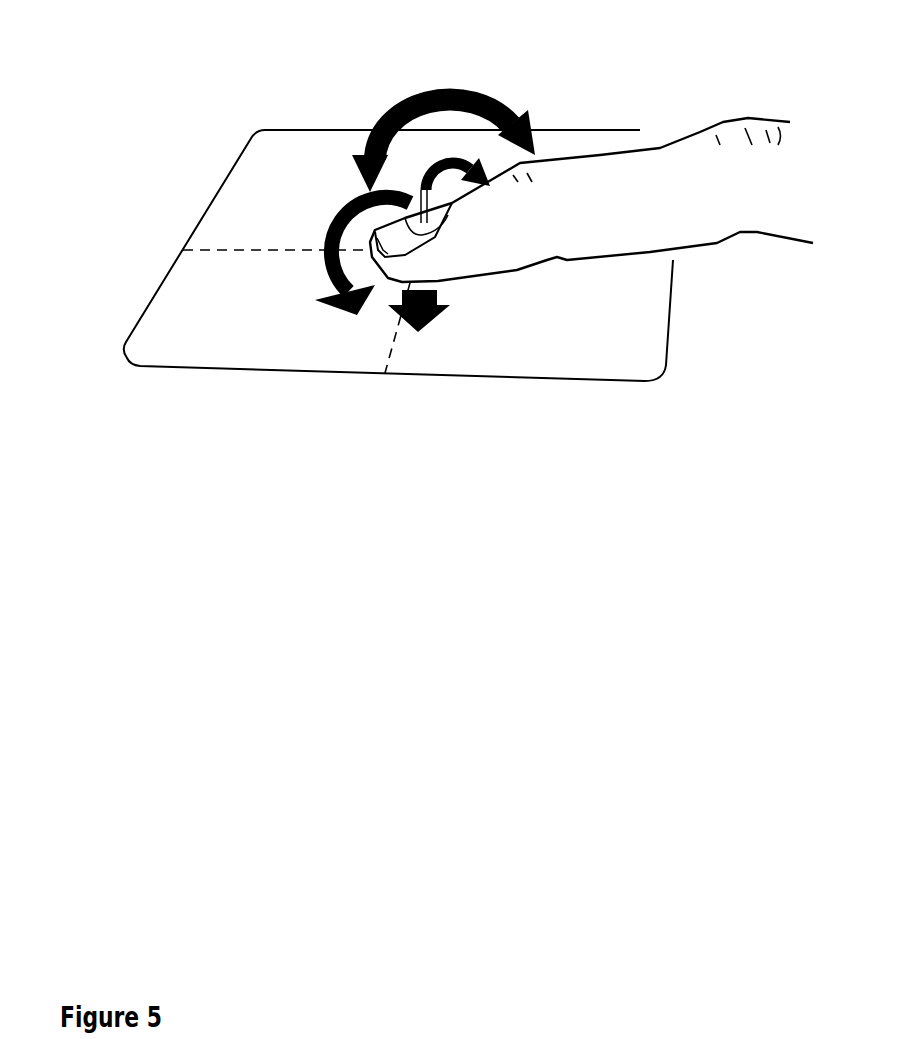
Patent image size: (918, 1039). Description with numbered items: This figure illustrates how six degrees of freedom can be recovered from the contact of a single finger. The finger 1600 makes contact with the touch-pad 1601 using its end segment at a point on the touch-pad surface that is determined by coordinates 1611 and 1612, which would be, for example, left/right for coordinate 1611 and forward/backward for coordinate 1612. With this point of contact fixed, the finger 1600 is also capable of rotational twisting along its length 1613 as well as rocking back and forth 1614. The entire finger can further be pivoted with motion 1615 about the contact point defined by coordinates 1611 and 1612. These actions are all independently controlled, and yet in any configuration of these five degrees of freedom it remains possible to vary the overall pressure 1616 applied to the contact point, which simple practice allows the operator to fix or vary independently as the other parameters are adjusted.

The finger 1600 is at (633, 165).
The touch-pad 1601 is at (433, 375).
The coordinate 1611 is at (385, 357).
The coordinate 1612 is at (212, 248).
The rotational twisting along finger length 1613 is at (432, 168).
The rocking back and forth 1614 is at (403, 96).
The pivoting motion 1615 is at (320, 276).
The overall pressure 1616 is at (438, 302).